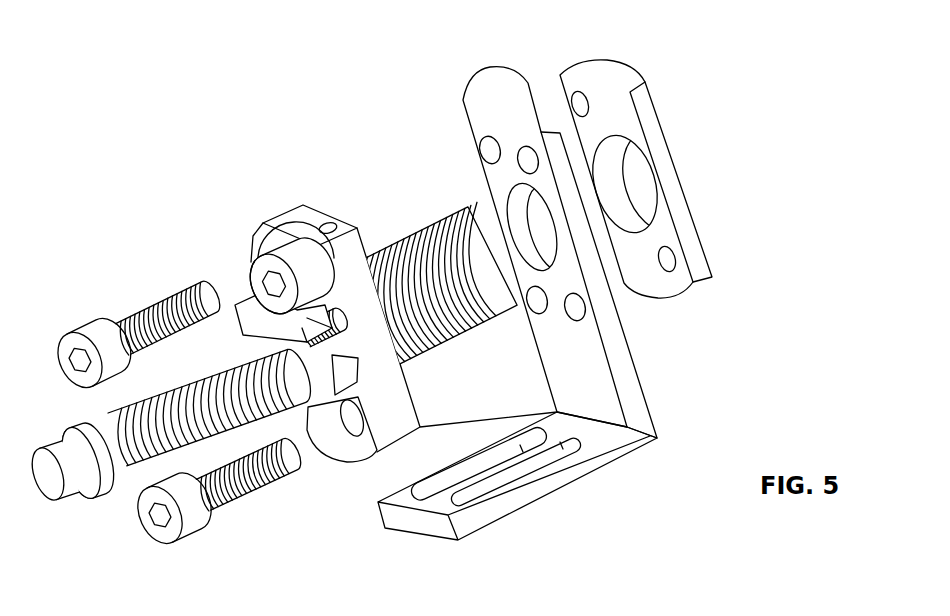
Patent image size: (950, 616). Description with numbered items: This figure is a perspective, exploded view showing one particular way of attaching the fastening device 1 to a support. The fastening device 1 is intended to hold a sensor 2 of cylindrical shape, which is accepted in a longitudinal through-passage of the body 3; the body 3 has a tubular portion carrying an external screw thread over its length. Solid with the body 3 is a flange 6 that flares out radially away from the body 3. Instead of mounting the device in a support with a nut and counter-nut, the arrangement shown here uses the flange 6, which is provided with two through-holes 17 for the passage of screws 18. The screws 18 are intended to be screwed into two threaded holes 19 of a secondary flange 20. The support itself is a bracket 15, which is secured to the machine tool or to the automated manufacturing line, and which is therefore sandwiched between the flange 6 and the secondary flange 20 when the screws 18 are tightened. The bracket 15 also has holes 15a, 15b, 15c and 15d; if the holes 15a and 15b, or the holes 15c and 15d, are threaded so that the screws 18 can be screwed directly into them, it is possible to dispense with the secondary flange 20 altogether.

The fastening device 1 is at (443, 357).
The sensor 2 is at (80, 437).
The body 3 is at (395, 228).
The flange 6 is at (305, 217).
The bracket 15 is at (502, 72).
The hole 15a is at (490, 150).
The hole 15b is at (577, 308).
The hole 15c is at (525, 160).
The hole 15d is at (537, 300).
The through-holes 17 is at (253, 250).
The screws 18 is at (150, 310).
The threaded holes 19 is at (580, 100).
The secondary flange 20 is at (642, 82).